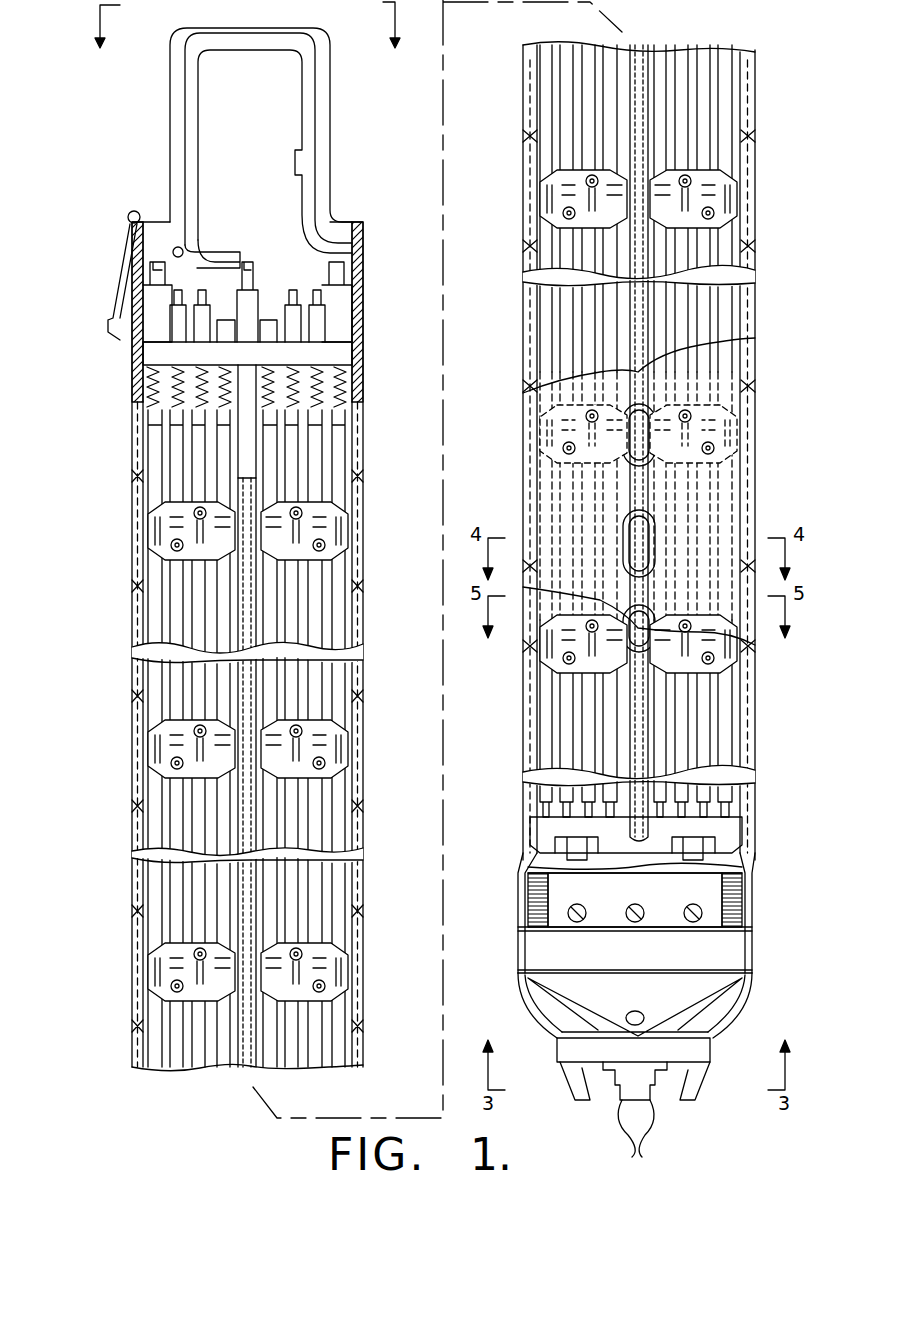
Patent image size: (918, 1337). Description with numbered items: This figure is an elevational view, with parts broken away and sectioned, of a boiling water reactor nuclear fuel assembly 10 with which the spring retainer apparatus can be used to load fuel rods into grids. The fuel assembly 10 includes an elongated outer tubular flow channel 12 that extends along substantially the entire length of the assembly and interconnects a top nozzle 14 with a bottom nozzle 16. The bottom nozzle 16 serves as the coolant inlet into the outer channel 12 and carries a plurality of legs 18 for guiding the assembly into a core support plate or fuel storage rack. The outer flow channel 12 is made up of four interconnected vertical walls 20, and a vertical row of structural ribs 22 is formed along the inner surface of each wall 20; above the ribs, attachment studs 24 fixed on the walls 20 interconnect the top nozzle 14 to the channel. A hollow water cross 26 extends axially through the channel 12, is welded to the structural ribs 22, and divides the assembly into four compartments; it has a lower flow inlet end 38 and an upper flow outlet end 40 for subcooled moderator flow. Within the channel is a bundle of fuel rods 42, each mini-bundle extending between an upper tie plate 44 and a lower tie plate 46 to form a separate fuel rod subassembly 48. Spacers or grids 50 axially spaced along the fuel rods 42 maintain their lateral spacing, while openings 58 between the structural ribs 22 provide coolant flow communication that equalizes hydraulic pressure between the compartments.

The nuclear fuel assembly 10 is at (158, 122).
The outer tubular flow channel 12 is at (140, 672).
The top nozzle 14 is at (363, 318).
The bottom nozzle 16 is at (752, 955).
The legs 18 is at (632, 1157).
The vertical walls 20 is at (140, 565).
The structural ribs 22 is at (148, 508).
The attachment studs 24 is at (175, 248).
The hollow water cross 26 is at (238, 620).
The lower flow inlet end 38 is at (640, 840).
The upper flow outlet end 40 is at (258, 480).
The fuel rods 42 is at (155, 433).
The upper tie plate 44 is at (148, 352).
The lower tie plate 46 is at (742, 826).
The fuel rod subassembly 48 is at (158, 446).
The spacers or grids 50 is at (165, 546).
The openings 58 is at (140, 855).